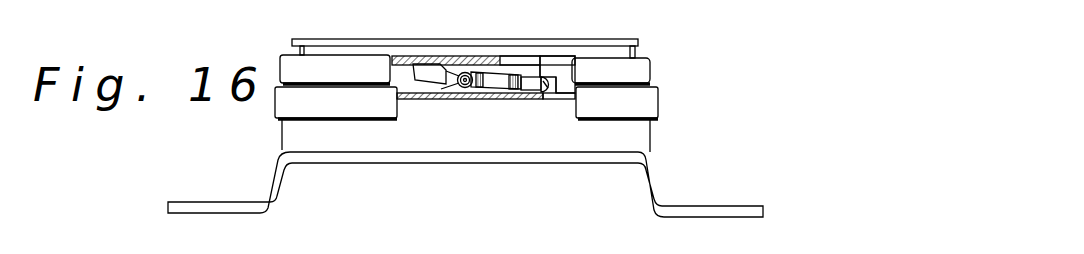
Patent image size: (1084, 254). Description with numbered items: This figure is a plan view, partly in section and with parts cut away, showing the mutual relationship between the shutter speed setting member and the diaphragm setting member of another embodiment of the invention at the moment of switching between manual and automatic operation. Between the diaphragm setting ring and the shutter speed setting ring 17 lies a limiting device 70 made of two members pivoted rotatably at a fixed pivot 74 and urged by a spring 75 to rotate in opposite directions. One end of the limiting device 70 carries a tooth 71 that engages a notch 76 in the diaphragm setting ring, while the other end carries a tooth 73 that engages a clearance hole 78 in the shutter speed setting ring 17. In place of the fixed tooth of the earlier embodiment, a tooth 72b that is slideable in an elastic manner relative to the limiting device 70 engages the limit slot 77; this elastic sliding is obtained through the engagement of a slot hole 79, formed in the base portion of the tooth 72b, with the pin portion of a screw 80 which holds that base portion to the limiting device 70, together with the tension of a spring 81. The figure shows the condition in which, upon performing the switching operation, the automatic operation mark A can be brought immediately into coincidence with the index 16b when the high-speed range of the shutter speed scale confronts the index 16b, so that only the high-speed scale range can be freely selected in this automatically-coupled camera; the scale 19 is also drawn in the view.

The index 16b is at (331, 123).
The shutter speed setting ring 17 is at (275, 104).
The automatic setting scale 19 is at (280, 61).
The automatic operation mark A is at (319, 63).
The limiting device 70 is at (490, 72).
The tooth 71 is at (422, 62).
The elastically slideable tooth 72b is at (543, 68).
The tooth 73 is at (549, 98).
The fixed pivot 74 is at (462, 88).
The spring 75 is at (443, 90).
The notch 76 is at (417, 60).
The limit slot 77 is at (510, 62).
The clearance hole 78 is at (512, 91).
The slot hole 79 is at (541, 93).
The screw 80 is at (558, 84).
The spring 81 is at (480, 89).